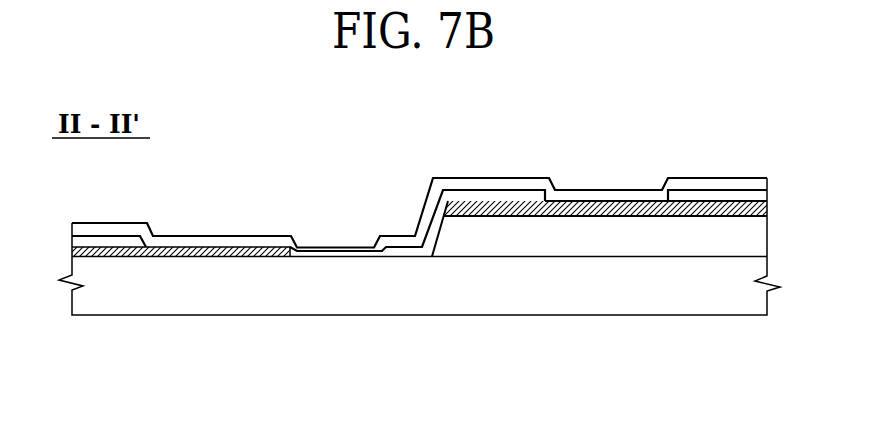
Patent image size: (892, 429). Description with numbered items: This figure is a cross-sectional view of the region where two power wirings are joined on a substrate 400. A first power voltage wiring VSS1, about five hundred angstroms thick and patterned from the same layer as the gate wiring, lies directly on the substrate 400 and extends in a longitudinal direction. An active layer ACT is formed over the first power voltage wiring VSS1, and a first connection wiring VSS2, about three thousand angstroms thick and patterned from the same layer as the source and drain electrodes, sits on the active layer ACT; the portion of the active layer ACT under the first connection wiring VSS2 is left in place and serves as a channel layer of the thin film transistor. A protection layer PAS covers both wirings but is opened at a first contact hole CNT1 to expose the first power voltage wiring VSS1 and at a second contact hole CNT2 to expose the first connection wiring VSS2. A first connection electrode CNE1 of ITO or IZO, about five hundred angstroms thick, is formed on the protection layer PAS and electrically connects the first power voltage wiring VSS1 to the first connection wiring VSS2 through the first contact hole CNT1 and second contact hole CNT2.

The substrate 400 is at (97, 295).
The protection layer PAS is at (125, 238).
The first power voltage wiring VSS1 is at (228, 255).
The first connection electrode CNE1 is at (330, 252).
The first connection wiring VSS2 is at (543, 215).
The active layer ACT is at (633, 243).
The first contact hole CNT1 is at (337, 214).
The second contact hole CNT2 is at (604, 164).